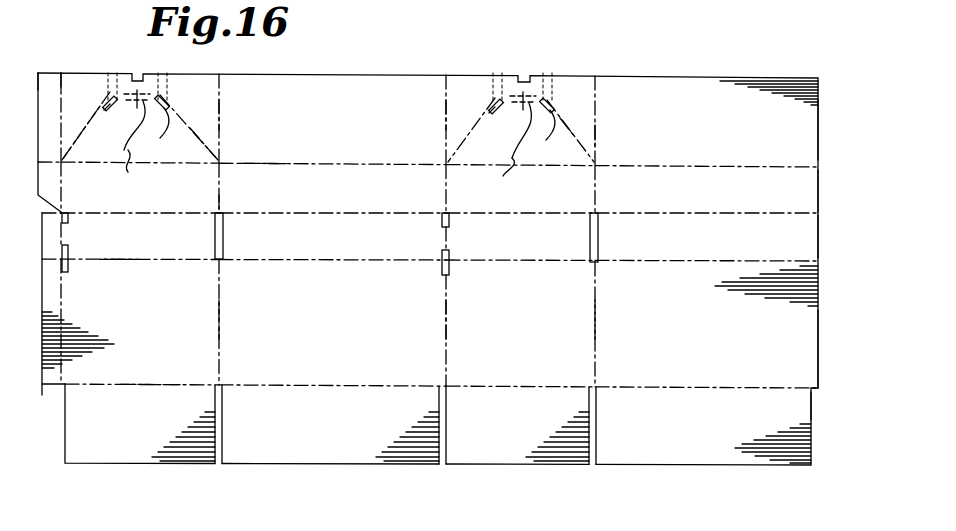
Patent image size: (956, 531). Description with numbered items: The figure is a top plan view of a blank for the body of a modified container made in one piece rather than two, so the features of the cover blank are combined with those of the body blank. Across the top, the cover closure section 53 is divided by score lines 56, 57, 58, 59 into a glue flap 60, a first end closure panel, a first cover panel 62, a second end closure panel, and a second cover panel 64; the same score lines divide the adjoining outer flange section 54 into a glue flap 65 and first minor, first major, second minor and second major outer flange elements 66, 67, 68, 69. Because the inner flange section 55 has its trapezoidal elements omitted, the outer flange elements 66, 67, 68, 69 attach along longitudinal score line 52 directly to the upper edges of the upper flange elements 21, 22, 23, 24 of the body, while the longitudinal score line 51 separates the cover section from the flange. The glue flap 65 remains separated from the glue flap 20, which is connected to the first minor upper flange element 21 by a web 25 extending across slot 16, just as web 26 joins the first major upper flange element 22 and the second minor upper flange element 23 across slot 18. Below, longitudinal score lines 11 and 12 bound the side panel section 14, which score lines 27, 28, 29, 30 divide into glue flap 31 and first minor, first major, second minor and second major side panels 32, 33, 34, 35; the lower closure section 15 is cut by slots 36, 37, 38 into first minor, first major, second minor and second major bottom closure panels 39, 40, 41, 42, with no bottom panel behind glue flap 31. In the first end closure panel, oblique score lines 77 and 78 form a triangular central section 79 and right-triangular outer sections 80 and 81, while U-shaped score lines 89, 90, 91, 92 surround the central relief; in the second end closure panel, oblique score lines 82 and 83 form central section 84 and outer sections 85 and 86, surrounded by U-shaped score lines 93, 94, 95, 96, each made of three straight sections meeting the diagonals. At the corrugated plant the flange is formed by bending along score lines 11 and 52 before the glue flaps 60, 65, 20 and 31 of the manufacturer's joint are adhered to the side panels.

The longitudinal score line 11 is at (122, 261).
The longitudinal score line 12 is at (153, 384).
The side panel section 14 is at (728, 345).
The lower closure section 15 is at (728, 419).
The slot 16 is at (78, 218).
The slot 18 is at (442, 254).
The glue flap 20 is at (60, 246).
The first minor upper flange element 21 is at (137, 250).
The first major upper flange element 22 is at (297, 249).
The second minor upper flange element 23 is at (517, 254).
The second major upper flange element 24 is at (676, 254).
The web 25 is at (68, 284).
The web 26 is at (450, 235).
The score line 27 is at (66, 336).
The score line 28 is at (221, 327).
The score line 29 is at (447, 328).
The score line 30 is at (597, 327).
The glue flap 31 is at (48, 386).
The first minor side panel 32 is at (142, 335).
The first major side panel 33 is at (317, 340).
The second minor side panel 34 is at (522, 340).
The second major side panel 35 is at (686, 340).
The slot 36 is at (219, 465).
The slot 37 is at (443, 465).
The slot 38 is at (592, 465).
The first minor bottom closure panel 39 is at (121, 437).
The first major bottom closure panel 40 is at (306, 437).
The second minor bottom closure panel 41 is at (492, 437).
The second major bottom closure panel 42 is at (676, 442).
The longitudinal score line 51 is at (266, 163).
The longitudinal score line 52 is at (236, 210).
The cover closure section 53 is at (738, 135).
The outer flange section 54 is at (740, 197).
The inner flange section 55 is at (740, 247).
The score line 56 is at (64, 73).
The score line 57 is at (221, 134).
The score line 58 is at (447, 118).
The score line 59 is at (597, 139).
The glue flap 60 is at (44, 72).
The first cover panel 62 is at (316, 112).
The second cover panel 64 is at (692, 130).
The glue flap 65 is at (56, 184).
The first minor outer flange element 66 is at (135, 202).
The first major outer flange element 67 is at (306, 200).
The second minor outer flange element 68 is at (527, 200).
The second major outer flange element 69 is at (686, 202).
The oblique score line 77 is at (104, 112).
The oblique score line 78 is at (198, 132).
The substantially triangular central section 79 is at (81, 159).
The substantially right triangular outer section 80 is at (67, 102).
The substantially right triangular outer section 81 is at (177, 104).
The oblique score line 82 is at (450, 126).
The oblique score line 83 is at (575, 133).
The substantially triangular central section 84 is at (476, 138).
The substantially right triangular outer section 85 is at (450, 103).
The substantially right triangular outer section 86 is at (560, 108).
The U-shaped score line 89 is at (128, 108).
The U-shaped score line 90 is at (128, 130).
The U-shaped score line 91 is at (115, 173).
The U-shaped score line 92 is at (175, 132).
The U-shaped score line 93 is at (513, 112).
The U-shaped score line 94 is at (513, 133).
The U-shaped score line 95 is at (495, 180).
The U-shaped score line 96 is at (556, 135).